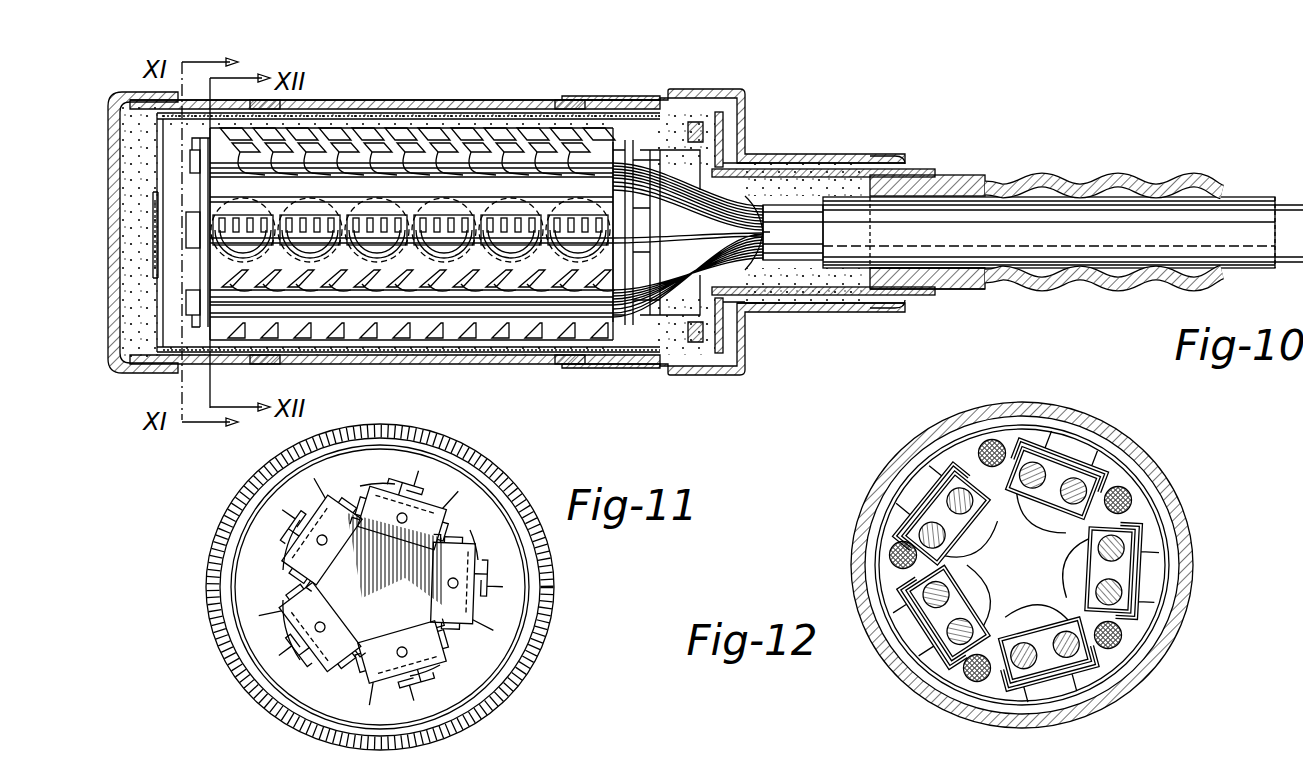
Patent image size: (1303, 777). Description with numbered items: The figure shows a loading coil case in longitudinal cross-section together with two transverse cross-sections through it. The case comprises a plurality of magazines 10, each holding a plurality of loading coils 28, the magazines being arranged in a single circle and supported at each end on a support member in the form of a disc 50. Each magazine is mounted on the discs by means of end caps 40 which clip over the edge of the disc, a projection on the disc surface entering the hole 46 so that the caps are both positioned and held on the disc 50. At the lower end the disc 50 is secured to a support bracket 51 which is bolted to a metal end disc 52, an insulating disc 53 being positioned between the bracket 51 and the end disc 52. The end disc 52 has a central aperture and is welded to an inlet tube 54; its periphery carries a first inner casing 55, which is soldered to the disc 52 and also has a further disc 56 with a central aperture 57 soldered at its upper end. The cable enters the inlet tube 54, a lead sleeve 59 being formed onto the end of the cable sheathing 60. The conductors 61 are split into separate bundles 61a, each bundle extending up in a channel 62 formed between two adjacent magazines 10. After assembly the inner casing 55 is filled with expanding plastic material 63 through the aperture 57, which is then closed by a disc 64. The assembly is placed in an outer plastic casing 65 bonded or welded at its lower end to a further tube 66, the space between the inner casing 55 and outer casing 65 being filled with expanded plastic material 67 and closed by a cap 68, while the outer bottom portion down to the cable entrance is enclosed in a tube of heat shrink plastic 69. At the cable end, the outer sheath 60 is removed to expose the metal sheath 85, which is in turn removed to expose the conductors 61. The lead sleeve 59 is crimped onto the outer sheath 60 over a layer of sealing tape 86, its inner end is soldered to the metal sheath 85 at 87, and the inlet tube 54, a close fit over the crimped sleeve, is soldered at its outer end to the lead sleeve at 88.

In FIG. 10, the magazine 10 is at (215, 181).
In FIG. 10, the loading coil 28 is at (560, 335).
In FIG. 12, the loading coil 28 is at (1095, 560).
In FIG. 10, the end cap 40 is at (196, 148).
In FIG. 11, the end cap 40 is at (435, 505).
In FIG. 11, the hole 46 is at (448, 582).
In FIG. 10, the disc 50 is at (205, 308).
In FIG. 11, the disc 50 is at (352, 505).
In FIG. 10, the support bracket 51 is at (745, 172).
In FIG. 10, the end disc 52 is at (705, 135).
In FIG. 10, the insulating disc 53 is at (722, 112).
In FIG. 10, the inlet tube 54 is at (840, 180).
In FIG. 10, the inner casing 55 is at (660, 118).
In FIG. 11, the inner casing 55 is at (548, 584).
In FIG. 12, the inner casing 55 is at (1185, 568).
In FIG. 10, the further disc 56 is at (150, 135).
In FIG. 10, the central aperture 57 is at (152, 205).
In FIG. 10, the lead sleeve 59 is at (965, 178).
In FIG. 10, the cable sheathing 60 is at (850, 197).
In FIG. 10, the conductors 61 is at (752, 285).
In FIG. 10, the bundle 61a is at (745, 178).
In FIG. 12, the bundle 61a is at (992, 440).
In FIG. 10, the channel 62 is at (318, 190).
In FIG. 12, the channel 62 is at (1010, 455).
In FIG. 10, the expanding plastic material 63 is at (492, 126).
In FIG. 10, the disc 64 is at (156, 240).
In FIG. 10, the outer plastic casing 65 is at (478, 108).
In FIG. 11, the outer plastic casing 65 is at (522, 520).
In FIG. 12, the outer plastic casing 65 is at (1120, 444).
In FIG. 10, the further tube 66 is at (730, 150).
In FIG. 10, the expanded plastic material 67 is at (445, 106).
In FIG. 10, the cap 68 is at (120, 90).
In FIG. 10, the heat shrink plastic tube 69 is at (572, 96).
In FIG. 10, the metal sheath 85 is at (785, 262).
In FIG. 10, the sealing tape 86 is at (960, 282).
In FIG. 10, the solder joint 87 is at (800, 290).
In FIG. 10, the solder joint 88 is at (930, 168).